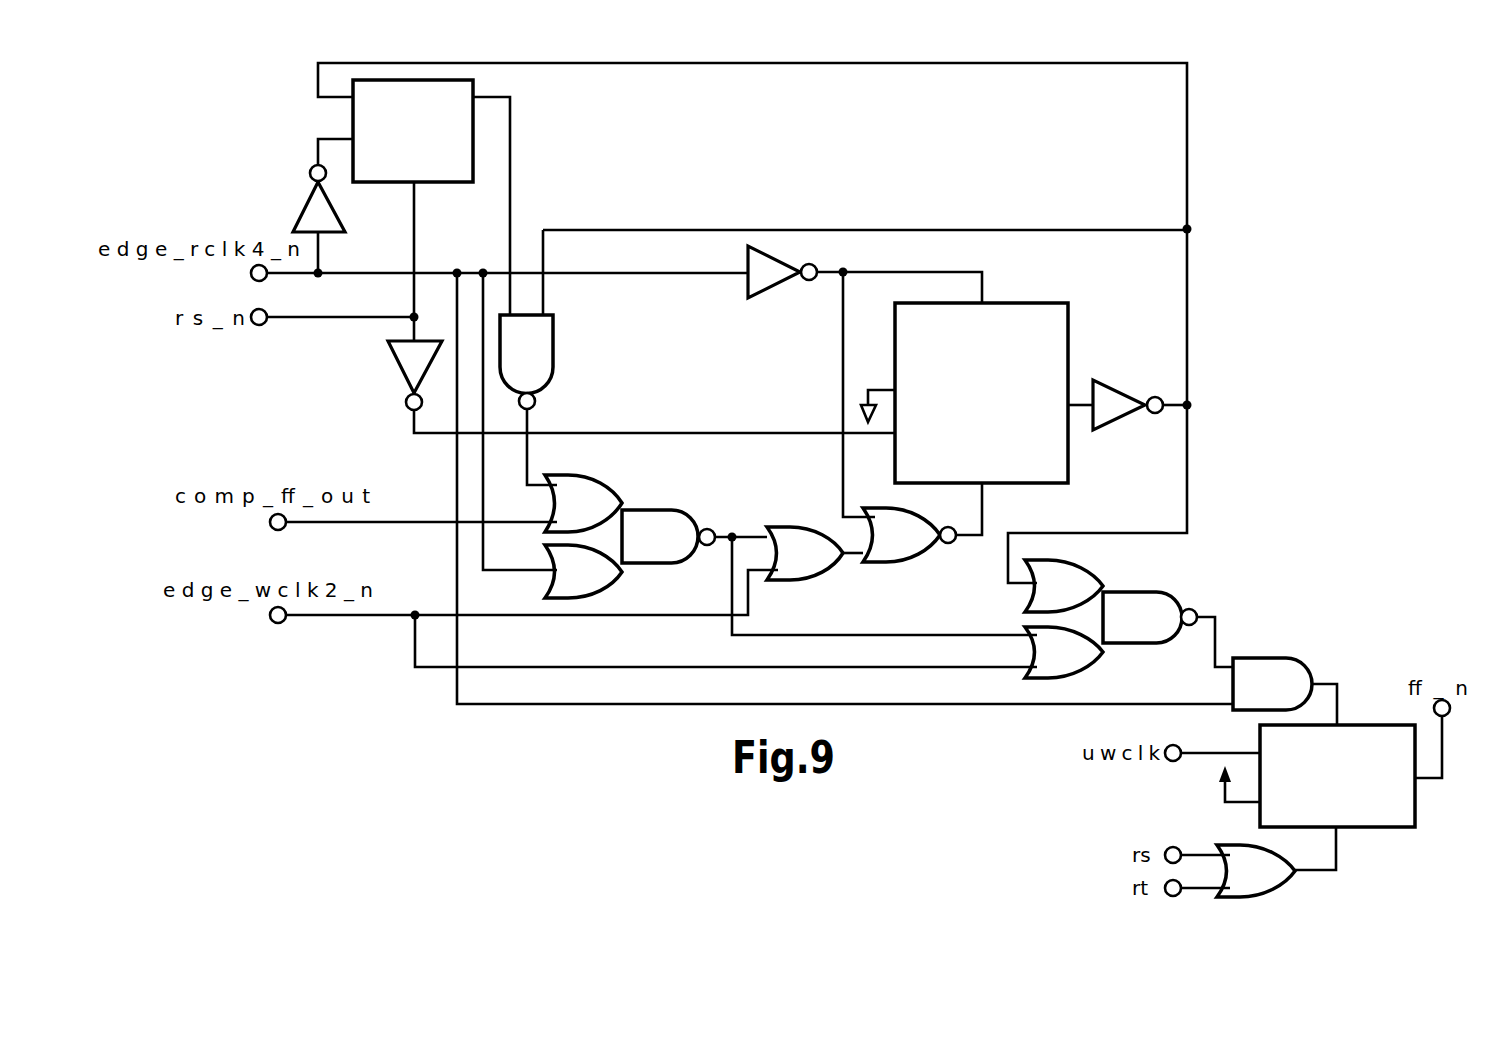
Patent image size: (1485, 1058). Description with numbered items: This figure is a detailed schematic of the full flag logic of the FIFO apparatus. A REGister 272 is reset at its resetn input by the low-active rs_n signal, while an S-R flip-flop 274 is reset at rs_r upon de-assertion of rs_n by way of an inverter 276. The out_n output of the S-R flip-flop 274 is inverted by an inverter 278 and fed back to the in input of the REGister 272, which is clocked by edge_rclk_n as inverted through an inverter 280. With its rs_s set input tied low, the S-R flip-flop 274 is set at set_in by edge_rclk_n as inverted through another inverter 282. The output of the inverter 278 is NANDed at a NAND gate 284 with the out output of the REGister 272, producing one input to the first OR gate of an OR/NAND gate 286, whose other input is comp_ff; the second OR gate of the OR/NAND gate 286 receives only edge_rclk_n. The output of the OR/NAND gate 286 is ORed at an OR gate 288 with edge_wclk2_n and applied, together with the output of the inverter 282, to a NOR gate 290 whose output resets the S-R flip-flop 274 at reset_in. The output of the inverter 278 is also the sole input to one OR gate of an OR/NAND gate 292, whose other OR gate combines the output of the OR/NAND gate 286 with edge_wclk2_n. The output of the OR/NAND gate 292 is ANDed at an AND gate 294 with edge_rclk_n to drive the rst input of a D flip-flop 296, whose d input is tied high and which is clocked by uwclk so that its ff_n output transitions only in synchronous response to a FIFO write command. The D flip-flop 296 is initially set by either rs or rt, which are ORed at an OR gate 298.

The REGister 272 is at (353, 121).
The S-R flip-flop 274 is at (1023, 302).
The inverter 276 is at (392, 362).
The inverter 278 is at (1120, 392).
The inverter 280 is at (293, 215).
The inverter 282 is at (775, 292).
The NAND gate 284 is at (555, 357).
The OR/NAND gate 286 is at (660, 490).
The OR gate 288 is at (793, 580).
The NOR gate 290 is at (900, 565).
The OR/NAND gate 292 is at (1148, 570).
The AND gate 294 is at (1290, 658).
The D flip-flop 296 is at (1395, 830).
The OR gate 298 is at (1232, 845).